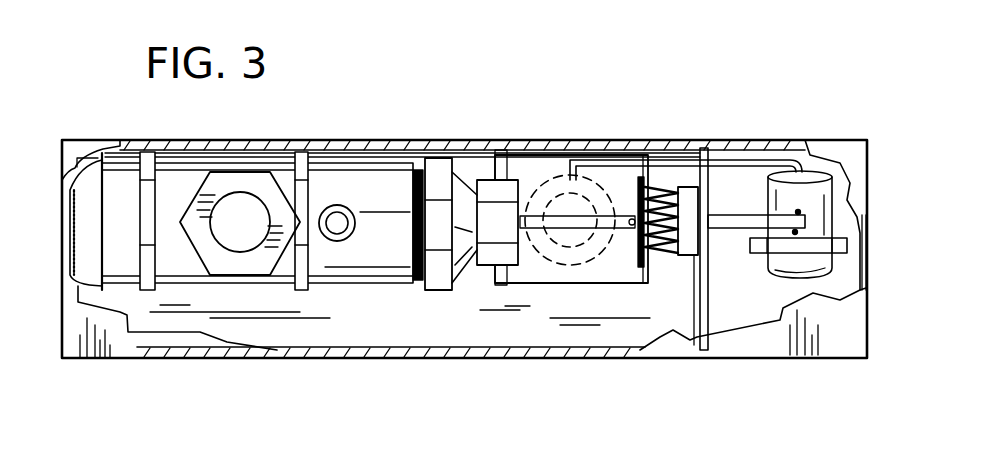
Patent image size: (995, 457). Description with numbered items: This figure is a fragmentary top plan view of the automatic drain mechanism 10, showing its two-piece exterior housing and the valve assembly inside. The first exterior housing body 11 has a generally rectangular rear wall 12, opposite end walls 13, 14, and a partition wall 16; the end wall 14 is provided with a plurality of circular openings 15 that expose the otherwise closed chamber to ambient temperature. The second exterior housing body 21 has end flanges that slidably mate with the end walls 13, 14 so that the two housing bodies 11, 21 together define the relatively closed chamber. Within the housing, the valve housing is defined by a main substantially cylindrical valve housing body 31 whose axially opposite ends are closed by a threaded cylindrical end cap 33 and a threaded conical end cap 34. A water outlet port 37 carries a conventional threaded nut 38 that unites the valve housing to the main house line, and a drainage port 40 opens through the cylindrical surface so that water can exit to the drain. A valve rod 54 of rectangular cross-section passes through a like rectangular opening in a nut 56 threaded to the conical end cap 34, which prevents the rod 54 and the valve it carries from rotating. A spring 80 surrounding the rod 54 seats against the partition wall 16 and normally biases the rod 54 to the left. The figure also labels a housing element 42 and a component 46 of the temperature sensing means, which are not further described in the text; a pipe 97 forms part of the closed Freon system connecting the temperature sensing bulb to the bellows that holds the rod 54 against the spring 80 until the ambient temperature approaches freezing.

The automatic drain mechanism 10 is at (492, 53).
The first exterior housing body 11 is at (493, 135).
The rear wall 12 is at (567, 139).
The end wall 13 is at (63, 243).
The end wall 14 is at (860, 259).
The circular openings 15 is at (868, 276).
The partition wall 16 is at (708, 297).
The second exterior housing body 21 is at (822, 364).
The main cylindrical valve housing body 31 is at (392, 254).
The cylindrical end cap 33 is at (95, 238).
The conical end cap 34 is at (466, 270).
The water outlet port 37 is at (212, 232).
The threaded nut 38 is at (237, 178).
The drainage port 40 is at (341, 207).
The motor housing 42 is at (598, 280).
The gear 46 is at (539, 181).
The valve rod 54 is at (726, 218).
The nut 56 is at (505, 241).
The spring 80 is at (668, 263).
The pipe 97 is at (738, 162).